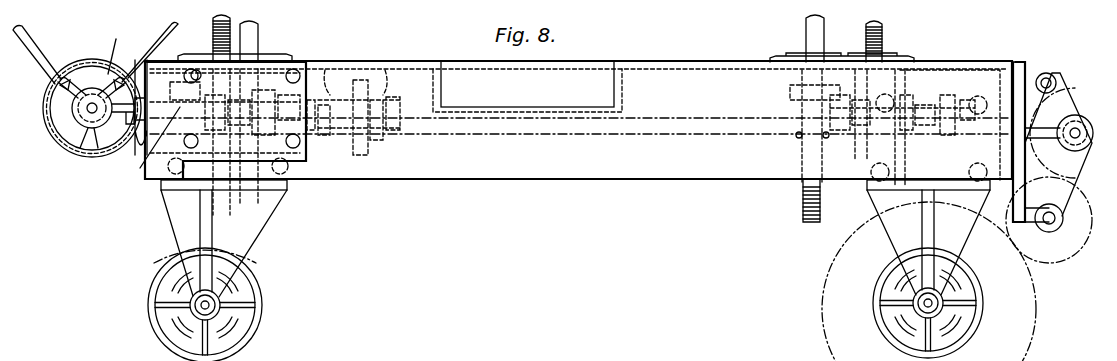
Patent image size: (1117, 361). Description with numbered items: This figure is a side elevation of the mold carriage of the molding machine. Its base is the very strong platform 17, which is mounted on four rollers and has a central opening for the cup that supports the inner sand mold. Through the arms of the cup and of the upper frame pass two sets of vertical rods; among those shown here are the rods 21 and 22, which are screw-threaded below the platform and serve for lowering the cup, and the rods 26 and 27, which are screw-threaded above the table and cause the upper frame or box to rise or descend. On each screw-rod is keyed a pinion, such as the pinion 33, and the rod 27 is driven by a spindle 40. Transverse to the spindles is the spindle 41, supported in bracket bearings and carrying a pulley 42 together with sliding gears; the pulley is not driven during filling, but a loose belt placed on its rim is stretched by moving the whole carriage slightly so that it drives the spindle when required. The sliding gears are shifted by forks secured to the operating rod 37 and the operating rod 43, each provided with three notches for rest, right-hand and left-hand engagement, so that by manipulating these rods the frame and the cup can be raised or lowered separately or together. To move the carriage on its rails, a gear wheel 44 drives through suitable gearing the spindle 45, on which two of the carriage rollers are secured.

The platform 17 is at (430, 176).
The lowering screw rod 21 is at (812, 33).
The lowering screw rod 22 is at (246, 40).
The raising screw rod 26 is at (883, 40).
The raising screw rod 27 is at (221, 30).
The pinion 33 is at (196, 70).
The operating rod 37 is at (56, 80).
The spindle 40 is at (144, 145).
The spindle 41 is at (88, 127).
The pulley 42 is at (43, 121).
The operating rod 43 is at (110, 45).
The gear wheel 44 is at (1072, 98).
The spindle 45 is at (885, 302).